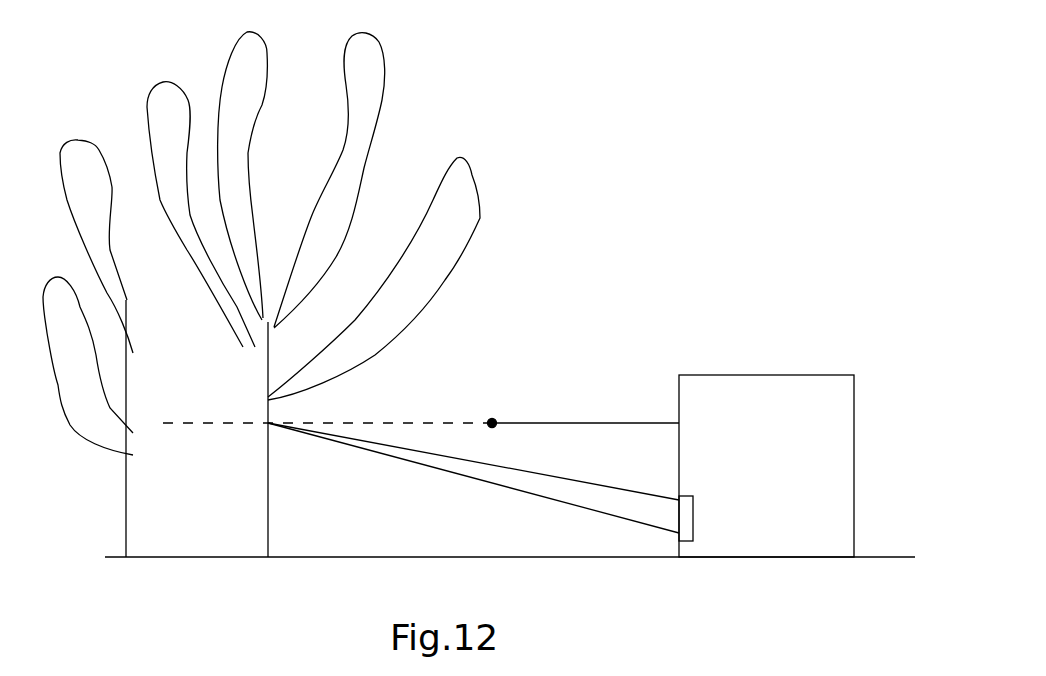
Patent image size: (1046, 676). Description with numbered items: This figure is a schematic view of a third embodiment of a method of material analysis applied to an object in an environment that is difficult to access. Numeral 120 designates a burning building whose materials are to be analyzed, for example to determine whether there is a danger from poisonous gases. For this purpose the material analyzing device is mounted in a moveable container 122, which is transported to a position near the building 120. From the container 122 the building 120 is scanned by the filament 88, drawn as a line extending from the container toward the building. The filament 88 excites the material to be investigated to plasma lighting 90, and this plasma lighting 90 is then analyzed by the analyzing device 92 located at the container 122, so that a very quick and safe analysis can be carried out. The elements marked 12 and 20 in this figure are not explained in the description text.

The light beam / line of sight 12 is at (573, 422).
The point (eye position) 20 is at (490, 420).
The filament 88 is at (390, 423).
The plasma lighting 90 is at (500, 477).
The analyzing device 92 is at (683, 522).
The burning building 120 is at (149, 513).
The moveable container 122 is at (791, 395).